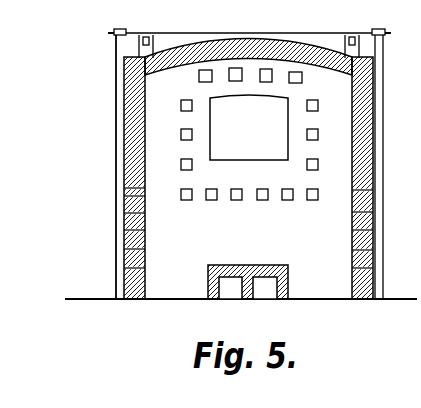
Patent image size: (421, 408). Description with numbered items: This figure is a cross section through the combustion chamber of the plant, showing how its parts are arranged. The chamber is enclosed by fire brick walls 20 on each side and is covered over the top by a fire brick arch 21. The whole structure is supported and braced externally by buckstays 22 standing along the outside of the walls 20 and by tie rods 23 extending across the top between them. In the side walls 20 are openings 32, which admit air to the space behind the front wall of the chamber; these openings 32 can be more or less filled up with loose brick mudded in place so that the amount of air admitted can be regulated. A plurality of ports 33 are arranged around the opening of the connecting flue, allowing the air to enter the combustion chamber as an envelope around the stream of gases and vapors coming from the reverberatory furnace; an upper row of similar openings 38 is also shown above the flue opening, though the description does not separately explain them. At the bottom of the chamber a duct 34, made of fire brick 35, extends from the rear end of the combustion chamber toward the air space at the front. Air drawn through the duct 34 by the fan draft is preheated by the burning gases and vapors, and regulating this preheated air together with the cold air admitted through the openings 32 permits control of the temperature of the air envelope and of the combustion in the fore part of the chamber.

The fire brick walls 20 is at (124, 117).
The fire brick arch 21 is at (240, 41).
The buckstays 22 is at (150, 34).
The tie rods 23 is at (288, 33).
The openings 32 is at (124, 194).
The ports 33 is at (181, 105).
The duct 34 is at (248, 288).
The fire brick 35 is at (259, 273).
The upper heating elements 38 is at (295, 83).